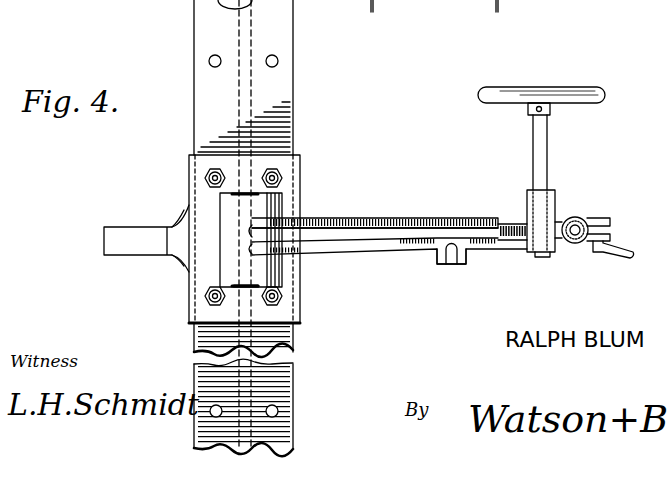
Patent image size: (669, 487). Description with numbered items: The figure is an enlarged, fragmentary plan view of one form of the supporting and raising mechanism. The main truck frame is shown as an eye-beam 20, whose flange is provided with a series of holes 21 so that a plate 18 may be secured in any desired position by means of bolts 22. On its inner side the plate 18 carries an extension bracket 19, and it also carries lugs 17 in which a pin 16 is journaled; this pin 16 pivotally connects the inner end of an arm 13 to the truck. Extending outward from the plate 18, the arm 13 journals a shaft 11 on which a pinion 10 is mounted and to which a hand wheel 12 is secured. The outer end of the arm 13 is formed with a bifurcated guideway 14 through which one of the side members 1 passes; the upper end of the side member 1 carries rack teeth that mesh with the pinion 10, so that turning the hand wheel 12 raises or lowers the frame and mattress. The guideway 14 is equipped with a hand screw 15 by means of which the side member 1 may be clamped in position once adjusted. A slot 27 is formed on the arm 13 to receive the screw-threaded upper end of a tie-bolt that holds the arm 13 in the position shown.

The side member 1 is at (584, 216).
The pinion 10 is at (540, 254).
The shaft 11 is at (532, 163).
The hand wheel 12 is at (512, 103).
The arm 13 is at (379, 217).
The bifurcated guideway 14 is at (590, 246).
The hand screw 15 is at (614, 242).
The pin 16 is at (243, 288).
The lug 17 is at (228, 205).
The plate 18 is at (296, 184).
The extension bracket 19 is at (128, 235).
The eye-beam 20 is at (195, 139).
The holes 21 is at (266, 57).
The bolts 22 is at (264, 172).
The slot 27 is at (454, 259).